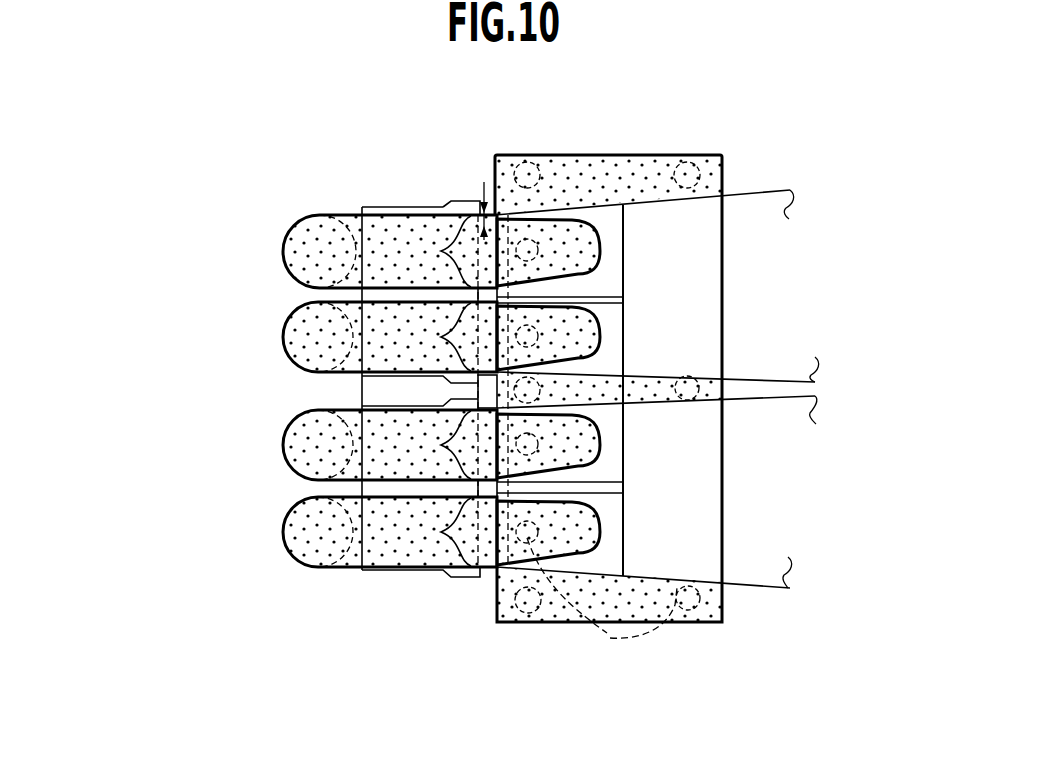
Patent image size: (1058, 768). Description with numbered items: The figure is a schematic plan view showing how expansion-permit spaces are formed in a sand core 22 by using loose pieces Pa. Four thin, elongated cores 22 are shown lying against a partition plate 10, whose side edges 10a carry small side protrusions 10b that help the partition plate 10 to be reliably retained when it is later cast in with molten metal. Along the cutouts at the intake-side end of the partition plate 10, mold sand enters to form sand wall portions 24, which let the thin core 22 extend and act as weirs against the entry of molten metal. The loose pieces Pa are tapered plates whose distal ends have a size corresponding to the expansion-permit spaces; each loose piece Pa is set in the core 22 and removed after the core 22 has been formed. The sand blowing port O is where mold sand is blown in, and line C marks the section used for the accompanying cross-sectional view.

The partition plate 10 is at (372, 201).
The side edges 10a is at (427, 205).
The side protrusions 10b is at (459, 201).
The core 22 is at (285, 229).
The sand wall portions 24 is at (501, 391).
The loose pieces Pa is at (762, 190).
The sand blowing port O is at (607, 636).
The line C— C is at (272, 331).